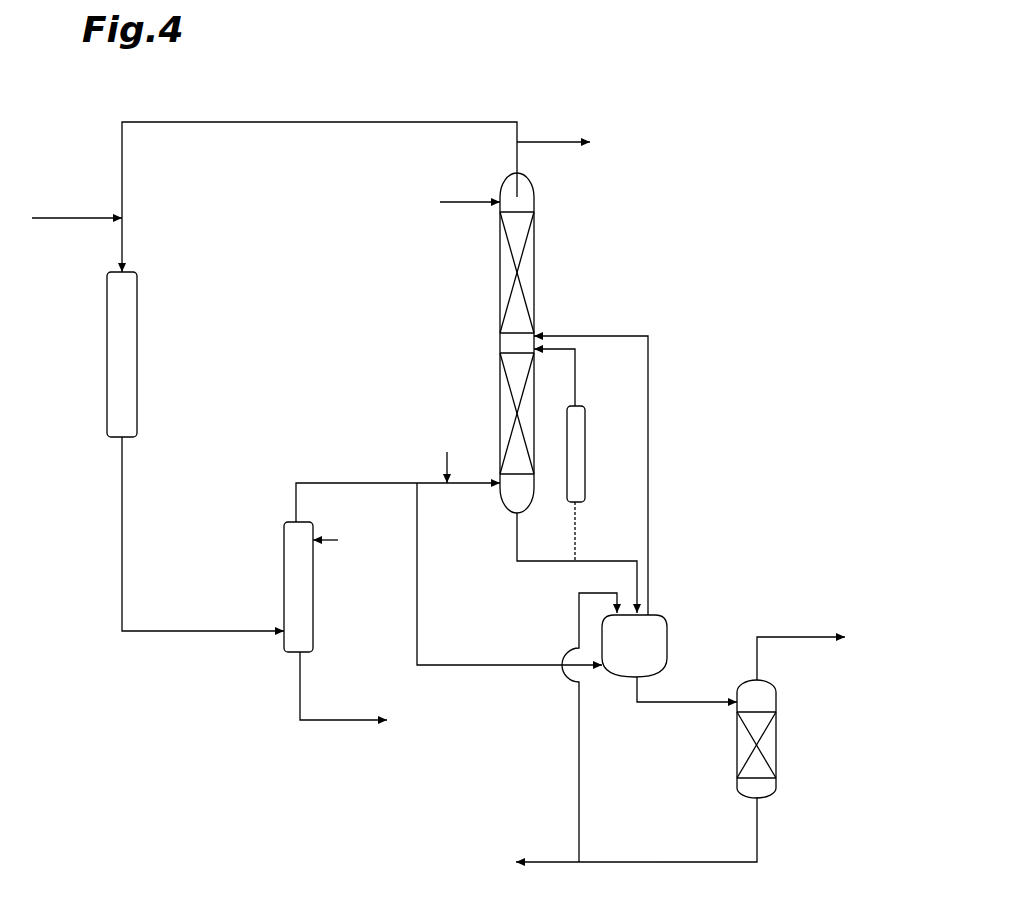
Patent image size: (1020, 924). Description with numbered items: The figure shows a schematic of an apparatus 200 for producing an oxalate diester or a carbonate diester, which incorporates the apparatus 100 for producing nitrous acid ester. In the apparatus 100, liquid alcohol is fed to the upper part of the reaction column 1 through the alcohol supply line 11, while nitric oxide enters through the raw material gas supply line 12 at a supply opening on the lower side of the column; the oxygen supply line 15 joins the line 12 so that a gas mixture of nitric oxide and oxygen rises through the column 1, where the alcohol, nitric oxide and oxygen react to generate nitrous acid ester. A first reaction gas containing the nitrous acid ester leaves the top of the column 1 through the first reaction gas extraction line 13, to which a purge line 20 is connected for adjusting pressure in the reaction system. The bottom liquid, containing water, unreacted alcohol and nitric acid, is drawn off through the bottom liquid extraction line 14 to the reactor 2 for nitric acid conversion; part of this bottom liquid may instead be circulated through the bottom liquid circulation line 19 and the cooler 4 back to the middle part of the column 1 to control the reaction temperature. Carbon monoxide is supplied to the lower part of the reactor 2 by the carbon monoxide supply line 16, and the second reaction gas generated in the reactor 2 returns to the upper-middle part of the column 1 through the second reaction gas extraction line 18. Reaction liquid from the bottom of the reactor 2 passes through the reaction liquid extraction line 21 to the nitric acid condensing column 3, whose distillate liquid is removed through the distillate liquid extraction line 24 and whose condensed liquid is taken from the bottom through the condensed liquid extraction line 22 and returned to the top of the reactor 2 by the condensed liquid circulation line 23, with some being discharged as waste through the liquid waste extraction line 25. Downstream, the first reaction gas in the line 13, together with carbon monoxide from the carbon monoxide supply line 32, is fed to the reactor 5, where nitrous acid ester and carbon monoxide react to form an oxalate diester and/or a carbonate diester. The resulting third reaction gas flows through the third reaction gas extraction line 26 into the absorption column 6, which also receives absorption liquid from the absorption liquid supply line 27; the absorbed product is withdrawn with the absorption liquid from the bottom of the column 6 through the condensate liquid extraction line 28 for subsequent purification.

The apparatus for producing an oxalate diester or a carbonate diester 200 is at (745, 103).
The apparatus for producing nitrous acid ester 100 is at (745, 562).
The reaction column for producing nitrous acid ester 1 is at (503, 343).
The reactor for nitric acid conversion 2 is at (644, 646).
The nitric acid condensing column 3 is at (764, 739).
The cooler 4 is at (585, 454).
The reactor for producing oxalate diester and/or carbonate diester 5 is at (130, 354).
The absorption column 6 is at (288, 587).
The alcohol supply line 11 is at (470, 190).
The raw material gas supply line 12 is at (398, 490).
The first reaction gas extraction line 13 is at (319, 197).
The bottom liquid extraction line 14 is at (562, 563).
The oxygen supply line 15 is at (447, 456).
The carbon monoxide supply line 16 is at (509, 574).
The second reaction gas extraction line 18 is at (606, 475).
The bottom liquid circulation line 19 is at (568, 455).
The purge line 20 is at (553, 131).
The reaction liquid extraction line 21 is at (687, 705).
The condensed liquid extraction line 22 is at (722, 829).
The condensed liquid circulation line 23 is at (581, 727).
The distillate liquid extraction line 24 is at (801, 649).
The liquid waste extraction line 25 is at (588, 879).
The third reaction gas extraction line 26 is at (203, 548).
The absorption liquid supply line 27 is at (338, 546).
The condensate liquid extraction line 28 is at (343, 702).
The carbon monoxide supply line 32 is at (77, 211).